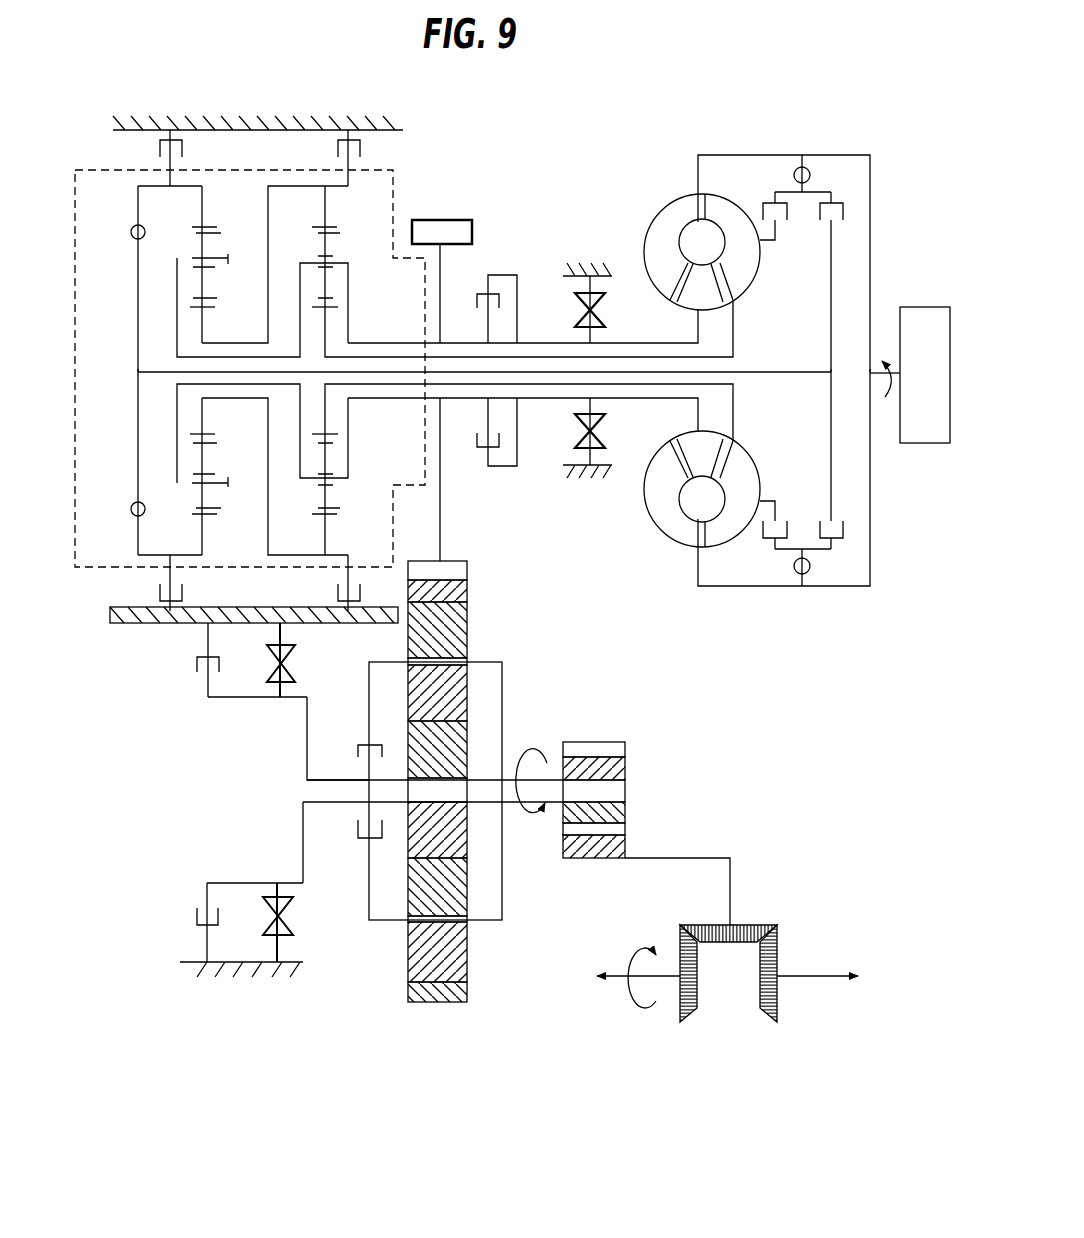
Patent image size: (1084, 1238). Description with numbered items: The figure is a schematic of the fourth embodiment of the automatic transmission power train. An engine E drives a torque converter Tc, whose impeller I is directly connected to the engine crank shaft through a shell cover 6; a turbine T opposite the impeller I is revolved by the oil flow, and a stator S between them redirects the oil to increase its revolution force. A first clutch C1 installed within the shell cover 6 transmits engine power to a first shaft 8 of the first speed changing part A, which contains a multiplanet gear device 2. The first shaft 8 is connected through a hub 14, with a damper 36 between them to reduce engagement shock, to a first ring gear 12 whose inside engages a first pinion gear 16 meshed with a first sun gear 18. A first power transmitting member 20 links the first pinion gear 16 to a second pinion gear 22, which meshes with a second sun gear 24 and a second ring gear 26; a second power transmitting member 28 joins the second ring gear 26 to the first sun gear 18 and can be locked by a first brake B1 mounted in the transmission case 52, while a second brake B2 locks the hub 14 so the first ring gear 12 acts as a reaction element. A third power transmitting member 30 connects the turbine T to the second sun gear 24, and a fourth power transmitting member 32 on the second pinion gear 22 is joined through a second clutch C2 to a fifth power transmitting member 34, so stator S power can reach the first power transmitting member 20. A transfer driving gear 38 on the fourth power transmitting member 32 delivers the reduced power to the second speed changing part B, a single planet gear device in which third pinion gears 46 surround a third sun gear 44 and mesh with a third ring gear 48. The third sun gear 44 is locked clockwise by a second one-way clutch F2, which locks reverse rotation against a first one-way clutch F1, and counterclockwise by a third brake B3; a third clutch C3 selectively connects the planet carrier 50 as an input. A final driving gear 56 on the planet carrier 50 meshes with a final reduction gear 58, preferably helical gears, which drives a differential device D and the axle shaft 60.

The multiplanet gear device 2 is at (92, 170).
The shell cover 6 is at (785, 155).
The first shaft 8 is at (784, 372).
The first ring gear 12 is at (194, 226).
The hub 14 is at (136, 305).
The first pinion gear 16 is at (213, 299).
The first sun gear 18 is at (212, 309).
The first power transmitting member 20 is at (192, 358).
The second pinion gear 22 is at (338, 235).
The second sun gear 24 is at (340, 307).
The second ring gear 26 is at (313, 226).
The second power transmitting member 28 is at (266, 216).
The third power transmitting member 30 is at (728, 362).
The fourth power transmitting member 32 is at (350, 283).
The fifth power transmitting member 34 is at (545, 343).
The damper 36 is at (130, 234).
The transfer driving gear 38 is at (474, 234).
The third sun gear 44 is at (460, 740).
The third pinion gear 46 is at (460, 630).
The third ring gear 48 is at (463, 592).
The planet carrier 50 is at (503, 887).
The transmission case 52 is at (268, 116).
The final driving gear 56 is at (622, 770).
The final reduction gear 58 is at (622, 845).
The axle shaft 60 is at (816, 976).
The first speed changing part A is at (407, 200).
The second speed changing part B is at (331, 1006).
The differential device D is at (630, 1025).
The engine E is at (910, 375).
The torque converter Tc is at (715, 152).
The impeller I is at (660, 225).
The turbine T is at (756, 263).
The stator S is at (690, 300).
The first brake B1 is at (367, 158).
The second brake B2 is at (191, 158).
The third brake B3 is at (230, 792).
The first clutch C1 is at (814, 197).
The second clutch C2 is at (480, 304).
The third clutch C3 is at (342, 790).
The first one-way clutch F1 is at (600, 303).
The second one-way clutch F2 is at (256, 800).